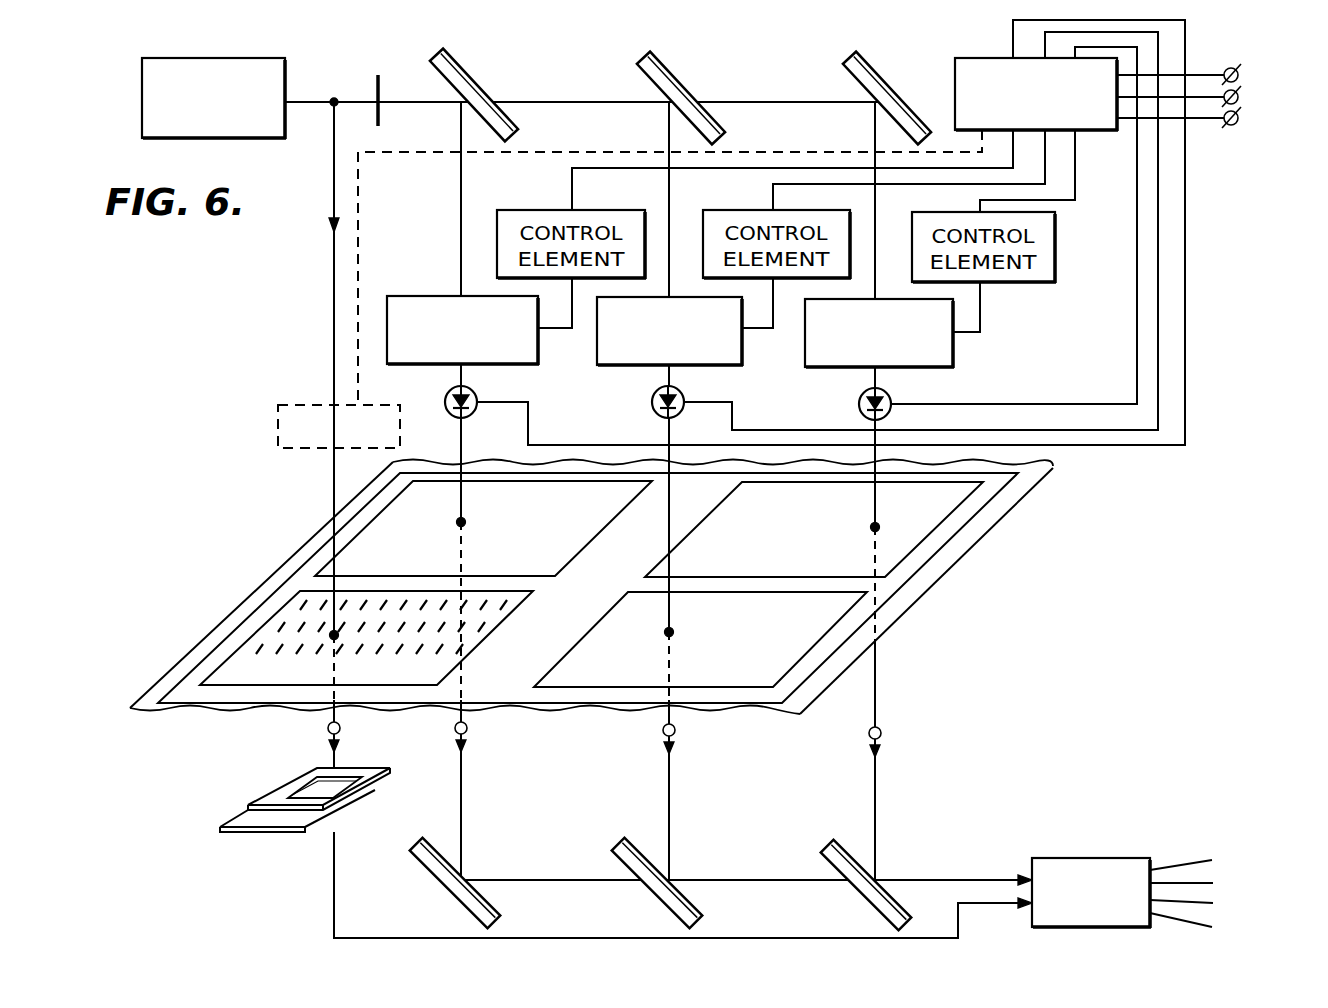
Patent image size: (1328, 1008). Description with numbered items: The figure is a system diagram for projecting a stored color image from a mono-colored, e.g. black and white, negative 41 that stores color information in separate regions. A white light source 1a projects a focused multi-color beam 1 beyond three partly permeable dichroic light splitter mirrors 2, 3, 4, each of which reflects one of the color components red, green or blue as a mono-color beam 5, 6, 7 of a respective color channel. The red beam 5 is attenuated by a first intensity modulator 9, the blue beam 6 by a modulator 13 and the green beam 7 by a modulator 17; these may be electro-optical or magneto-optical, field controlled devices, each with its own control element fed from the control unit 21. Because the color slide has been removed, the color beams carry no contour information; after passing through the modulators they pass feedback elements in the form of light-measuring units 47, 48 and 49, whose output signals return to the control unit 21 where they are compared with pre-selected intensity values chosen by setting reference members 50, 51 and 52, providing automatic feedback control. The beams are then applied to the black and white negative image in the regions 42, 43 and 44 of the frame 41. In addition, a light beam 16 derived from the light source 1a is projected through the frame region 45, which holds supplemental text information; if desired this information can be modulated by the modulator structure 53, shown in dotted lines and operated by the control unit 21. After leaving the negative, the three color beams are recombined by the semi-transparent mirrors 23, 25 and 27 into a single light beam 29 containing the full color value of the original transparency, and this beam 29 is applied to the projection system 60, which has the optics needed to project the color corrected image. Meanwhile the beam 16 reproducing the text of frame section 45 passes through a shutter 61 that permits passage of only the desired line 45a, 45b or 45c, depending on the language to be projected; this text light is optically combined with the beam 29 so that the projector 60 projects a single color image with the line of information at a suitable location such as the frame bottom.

The light source 1a is at (224, 58).
The multi-color beam 1 is at (291, 102).
The dichroic mirror 2 is at (474, 77).
The dichroic mirror 3 is at (681, 77).
The dichroic mirror 4 is at (899, 88).
The mono-color beam 5 is at (463, 127).
The mono-color beam 6 is at (669, 130).
The mono-color beam 7 is at (881, 130).
The intensity modulator 9 is at (422, 296).
The modulator 13 is at (597, 340).
The modulator 17 is at (955, 342).
The light beam 16 is at (334, 266).
The control unit 21 is at (965, 57).
The semi-transparent mirror 23 is at (418, 863).
The semi-transparent mirror 25 is at (616, 865).
The semi-transparent mirror 27 is at (826, 865).
The single light beam 29 is at (948, 878).
The negative 41 is at (493, 683).
The area 42 is at (388, 514).
The area 43 is at (938, 510).
The area 44 is at (818, 615).
The frame region 45 is at (225, 677).
The line 45a is at (293, 605).
The line 45b is at (275, 626).
The line 45c is at (252, 647).
The light-measuring unit 47 is at (445, 402).
The light-measuring unit 48 is at (652, 402).
The light-measuring unit 49 is at (860, 405).
The reference member 50 is at (1240, 118).
The reference member 51 is at (1240, 97).
The reference member 52 is at (1240, 75).
The modulator structure 53 is at (307, 405).
The projection system 60 is at (1068, 898).
The shutter 61 is at (263, 828).